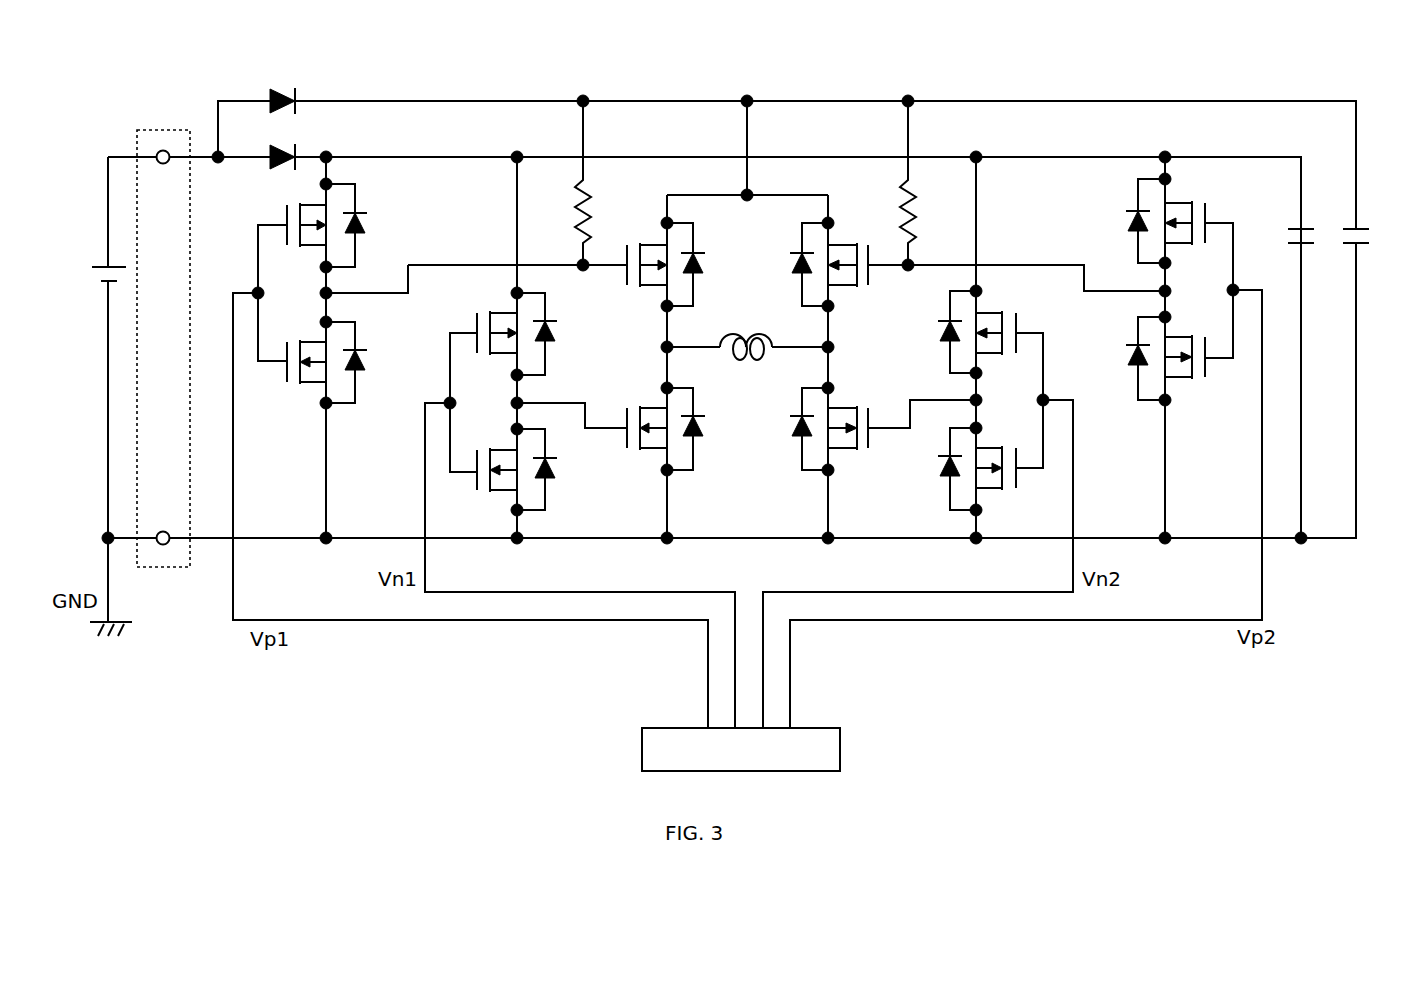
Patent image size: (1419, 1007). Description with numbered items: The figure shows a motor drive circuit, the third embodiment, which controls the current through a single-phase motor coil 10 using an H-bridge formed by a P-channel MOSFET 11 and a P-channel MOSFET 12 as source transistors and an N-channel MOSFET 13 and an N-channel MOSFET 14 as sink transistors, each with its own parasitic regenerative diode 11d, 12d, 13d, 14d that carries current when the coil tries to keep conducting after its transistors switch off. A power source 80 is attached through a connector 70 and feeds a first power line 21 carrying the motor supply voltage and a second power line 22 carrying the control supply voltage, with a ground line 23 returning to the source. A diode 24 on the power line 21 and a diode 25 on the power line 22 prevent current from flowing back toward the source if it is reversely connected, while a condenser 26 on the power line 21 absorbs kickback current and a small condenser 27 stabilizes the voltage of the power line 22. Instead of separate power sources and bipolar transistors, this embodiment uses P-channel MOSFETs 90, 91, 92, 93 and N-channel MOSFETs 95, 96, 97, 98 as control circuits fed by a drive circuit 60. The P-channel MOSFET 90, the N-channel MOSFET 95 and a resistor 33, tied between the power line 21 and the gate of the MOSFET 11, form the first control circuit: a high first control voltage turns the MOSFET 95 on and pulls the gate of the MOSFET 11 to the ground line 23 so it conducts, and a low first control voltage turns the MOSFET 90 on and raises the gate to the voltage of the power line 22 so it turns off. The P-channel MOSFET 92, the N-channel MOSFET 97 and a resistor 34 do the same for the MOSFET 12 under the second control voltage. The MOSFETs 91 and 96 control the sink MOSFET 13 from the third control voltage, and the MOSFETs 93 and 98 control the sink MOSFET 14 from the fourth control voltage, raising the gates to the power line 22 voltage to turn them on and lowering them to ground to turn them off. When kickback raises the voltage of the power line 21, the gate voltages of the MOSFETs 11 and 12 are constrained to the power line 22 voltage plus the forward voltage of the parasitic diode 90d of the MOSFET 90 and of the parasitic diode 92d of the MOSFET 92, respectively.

The motor coil 10 is at (752, 362).
The P-channel MOSFET 11 is at (693, 282).
The P-channel MOSFET 12 is at (801, 282).
The N-channel MOSFET 13 is at (679, 454).
The N-channel MOSFET 14 is at (821, 454).
The parasitic diode 11d is at (705, 276).
The parasitic diode 12d is at (790, 260).
The parasitic diode 13d is at (700, 447).
The parasitic diode 14d is at (795, 447).
The power line 21 is at (450, 99).
The power line 22 is at (450, 161).
The ground line 23 is at (273, 541).
The diode 24 is at (276, 93).
The diode 25 is at (270, 172).
The condenser 26 is at (1364, 250).
The condenser 27 is at (1296, 250).
The resistor 33 is at (600, 206).
The resistor 34 is at (882, 207).
The drive circuit 60 is at (842, 742).
The connector 70 is at (178, 129).
The power source 80 is at (106, 284).
The P-channel MOSFET 90 is at (349, 347).
The P-channel MOSFET 91 is at (505, 358).
The P-channel MOSFET 92 is at (1142, 347).
The P-channel MOSFET 93 is at (1000, 358).
The N-channel MOSFET 95 is at (302, 386).
The N-channel MOSFET 96 is at (507, 494).
The N-channel MOSFET 97 is at (1186, 382).
The N-channel MOSFET 98 is at (990, 496).
The parasitic diode 90d is at (365, 229).
The parasitic diode 92d is at (1128, 229).